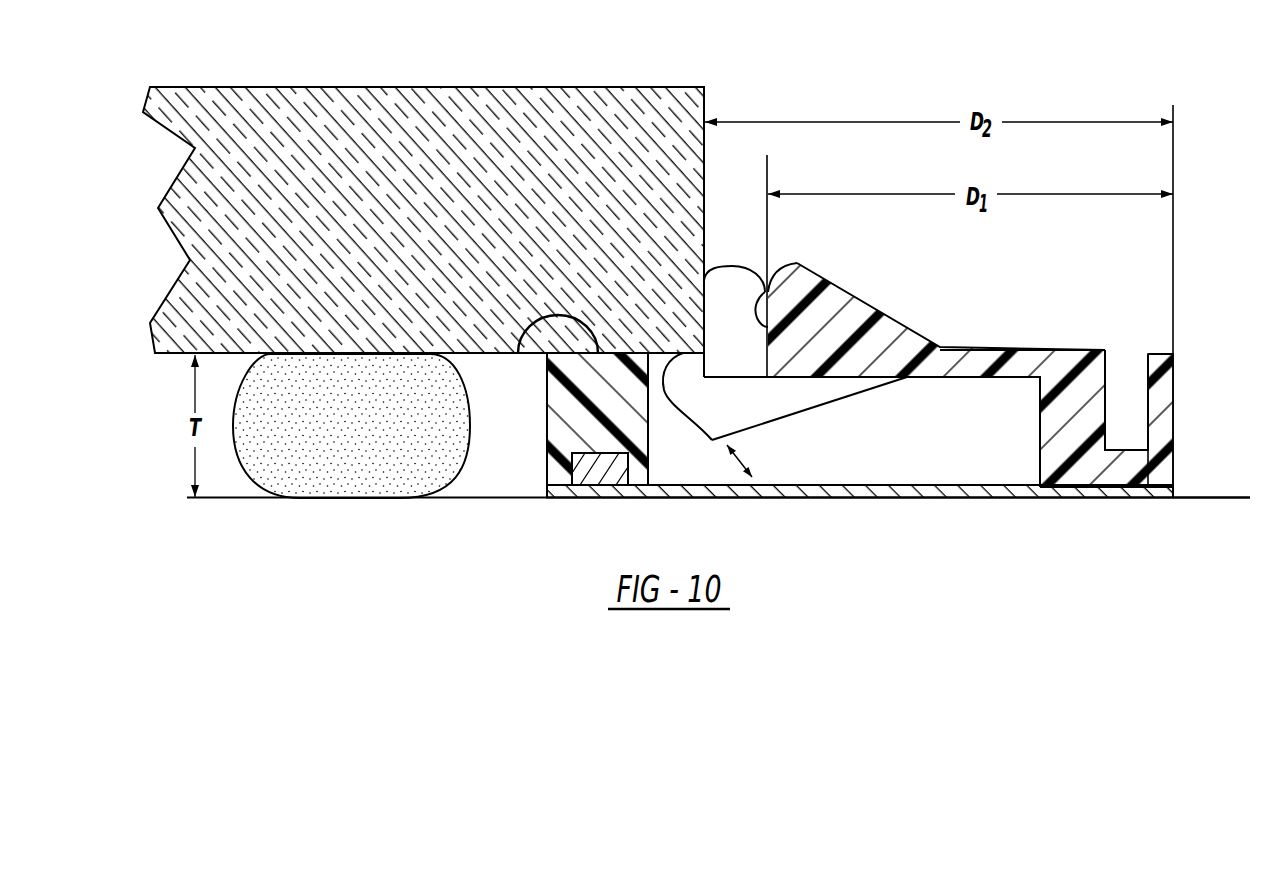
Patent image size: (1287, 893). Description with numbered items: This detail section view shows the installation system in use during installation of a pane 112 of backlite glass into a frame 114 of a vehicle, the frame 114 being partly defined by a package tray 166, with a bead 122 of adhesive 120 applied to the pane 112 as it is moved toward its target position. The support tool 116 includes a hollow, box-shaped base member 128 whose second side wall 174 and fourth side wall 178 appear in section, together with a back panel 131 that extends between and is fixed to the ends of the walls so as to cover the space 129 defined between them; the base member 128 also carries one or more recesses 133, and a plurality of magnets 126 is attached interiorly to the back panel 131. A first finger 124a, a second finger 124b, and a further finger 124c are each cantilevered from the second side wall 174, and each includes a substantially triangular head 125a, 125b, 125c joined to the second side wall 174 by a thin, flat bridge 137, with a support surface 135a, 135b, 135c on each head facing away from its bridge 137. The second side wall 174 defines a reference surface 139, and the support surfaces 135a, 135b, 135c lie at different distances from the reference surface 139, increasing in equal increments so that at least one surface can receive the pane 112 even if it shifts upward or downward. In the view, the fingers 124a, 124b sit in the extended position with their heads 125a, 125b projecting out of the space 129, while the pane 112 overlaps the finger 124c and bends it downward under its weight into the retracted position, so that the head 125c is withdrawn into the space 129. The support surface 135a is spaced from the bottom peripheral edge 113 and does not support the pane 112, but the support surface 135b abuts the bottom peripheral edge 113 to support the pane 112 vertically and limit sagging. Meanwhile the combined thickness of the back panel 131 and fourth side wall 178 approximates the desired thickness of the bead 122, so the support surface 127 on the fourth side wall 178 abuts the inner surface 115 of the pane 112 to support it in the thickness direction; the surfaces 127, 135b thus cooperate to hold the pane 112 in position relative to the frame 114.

The pane 112 is at (355, 135).
The bottom peripheral edge 113 is at (705, 100).
The frame 114 is at (1195, 494).
The inner surface 115 is at (238, 353).
The support tool 116 is at (1187, 392).
The adhesive 120 is at (310, 442).
The bead 122 is at (370, 430).
The first finger 124a is at (863, 310).
The second finger 124b is at (740, 285).
The finger 124c is at (787, 393).
The head 125a is at (833, 297).
The head 125b is at (725, 282).
The head 125c is at (747, 410).
The magnets 126 is at (602, 467).
The support surface 127 is at (520, 353).
The base member 128 is at (1162, 405).
The space 129 is at (938, 440).
The back panel 131 is at (875, 500).
The recesses 133 is at (1147, 412).
The support surface 135a is at (770, 296).
The support surface 135b is at (700, 333).
The support surface 135c is at (707, 420).
The bridge 137 is at (990, 350).
The reference surface 139 is at (1175, 365).
The package tray 166 is at (1230, 498).
The second side wall 174 is at (1080, 430).
The fourth side wall 178 is at (568, 415).